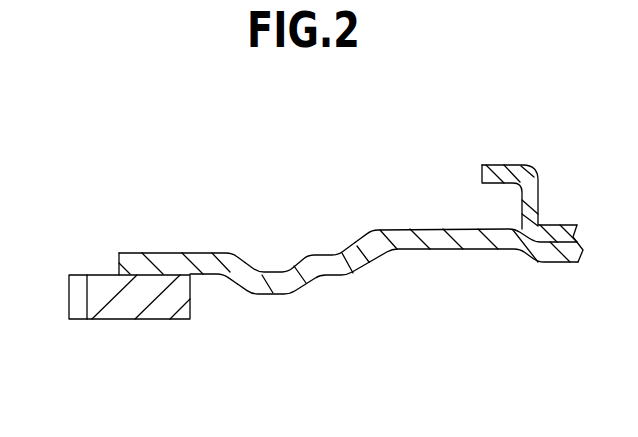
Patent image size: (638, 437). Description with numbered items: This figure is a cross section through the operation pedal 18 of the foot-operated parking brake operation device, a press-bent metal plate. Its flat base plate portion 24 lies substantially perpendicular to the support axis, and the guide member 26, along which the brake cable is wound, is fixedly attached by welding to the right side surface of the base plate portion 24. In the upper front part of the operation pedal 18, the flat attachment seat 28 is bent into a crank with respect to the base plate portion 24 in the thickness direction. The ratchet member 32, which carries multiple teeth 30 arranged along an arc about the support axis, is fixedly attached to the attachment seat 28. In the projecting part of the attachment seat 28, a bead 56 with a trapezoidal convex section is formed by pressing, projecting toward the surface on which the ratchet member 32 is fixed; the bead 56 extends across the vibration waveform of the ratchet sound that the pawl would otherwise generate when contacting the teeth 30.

The operation pedal 18 is at (248, 165).
The base plate portion 24 is at (447, 235).
The guide member 26 is at (498, 170).
The attachment seat 28 is at (173, 262).
The teeth 30 is at (77, 297).
The ratchet member 32 is at (140, 300).
The bead 56 is at (277, 282).